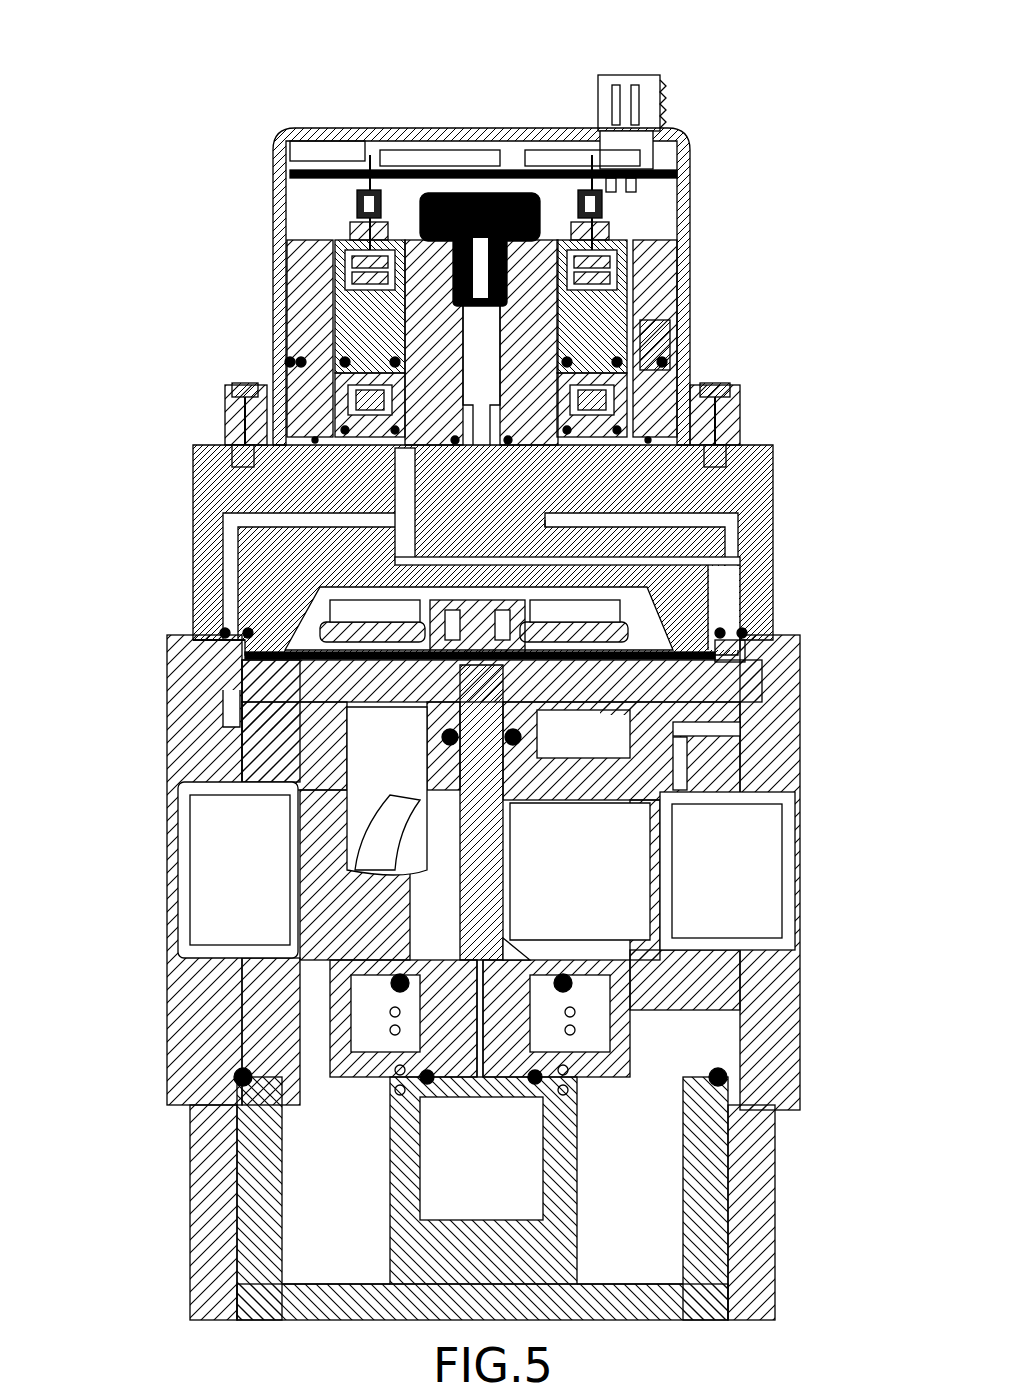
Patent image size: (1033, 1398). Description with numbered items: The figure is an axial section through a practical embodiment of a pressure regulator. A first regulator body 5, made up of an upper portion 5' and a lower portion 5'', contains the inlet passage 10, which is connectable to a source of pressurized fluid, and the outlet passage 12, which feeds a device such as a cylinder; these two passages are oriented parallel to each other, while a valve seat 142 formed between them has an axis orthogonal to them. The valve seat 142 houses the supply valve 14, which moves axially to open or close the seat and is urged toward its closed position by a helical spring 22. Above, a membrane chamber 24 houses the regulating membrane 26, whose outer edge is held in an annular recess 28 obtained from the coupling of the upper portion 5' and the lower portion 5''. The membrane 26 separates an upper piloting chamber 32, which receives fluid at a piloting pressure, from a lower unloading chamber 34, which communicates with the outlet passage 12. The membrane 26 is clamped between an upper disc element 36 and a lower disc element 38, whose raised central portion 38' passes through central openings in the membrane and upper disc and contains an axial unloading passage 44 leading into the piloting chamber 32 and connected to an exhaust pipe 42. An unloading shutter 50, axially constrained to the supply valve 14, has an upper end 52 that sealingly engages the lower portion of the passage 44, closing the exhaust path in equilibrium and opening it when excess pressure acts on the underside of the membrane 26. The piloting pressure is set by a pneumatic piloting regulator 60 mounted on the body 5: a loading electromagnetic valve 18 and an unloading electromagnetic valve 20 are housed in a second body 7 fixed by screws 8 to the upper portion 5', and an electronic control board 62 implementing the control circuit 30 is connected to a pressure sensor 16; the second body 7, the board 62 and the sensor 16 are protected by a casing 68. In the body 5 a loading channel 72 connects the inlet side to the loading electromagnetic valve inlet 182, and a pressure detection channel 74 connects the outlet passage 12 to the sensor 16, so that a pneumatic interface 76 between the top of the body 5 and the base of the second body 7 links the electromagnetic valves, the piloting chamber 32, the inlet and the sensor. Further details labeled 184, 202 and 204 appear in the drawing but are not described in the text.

The pneumatic piloting regulator 60 is at (812, 155).
The casing 68 is at (293, 135).
The control circuit 30 is at (390, 165).
The electronic control board 62 is at (455, 160).
The pressure sensor 16 is at (512, 193).
The loading electromagnetic valve 18 is at (280, 278).
The second body 7 is at (283, 325).
The pneumatic interface 76 is at (340, 250).
The unloading electromagnetic valve 20 is at (683, 300).
The coil housing 202 is at (683, 330).
The screws 8 is at (240, 397).
The loading electromagnetic valve inlet 182 is at (287, 357).
The screw recess 184 is at (250, 422).
The fastening flange 204 is at (738, 410).
The upper portion of the regulator body 5' is at (549, 537).
The loading channel 72 is at (205, 525).
The membrane chamber 24 is at (250, 560).
The upper disc element 36 is at (340, 600).
The exhaust pipe 42 is at (720, 570).
The upper piloting chamber 32 is at (600, 585).
The raised central portion of the lower disc element 38' is at (711, 617).
The lower disc element 38 is at (440, 665).
The regulating membrane 26 is at (228, 638).
The pressure detection channel 74 is at (718, 668).
The first regulator body 5 is at (878, 650).
The inlet passage 10 is at (205, 927).
The outlet passage 12 is at (755, 922).
The annular recess 28 is at (272, 692).
The lower unloading chamber 34 is at (615, 713).
The upper end of the unloading shutter 52 is at (740, 762).
The valve seat 142 is at (372, 830).
The axial unloading passage 44 is at (455, 742).
The supply valve 14 is at (530, 940).
The unloading shutter 50 is at (428, 905).
The lower portion of the regulator body 5'' is at (551, 1186).
The helical spring 22 is at (408, 1082).